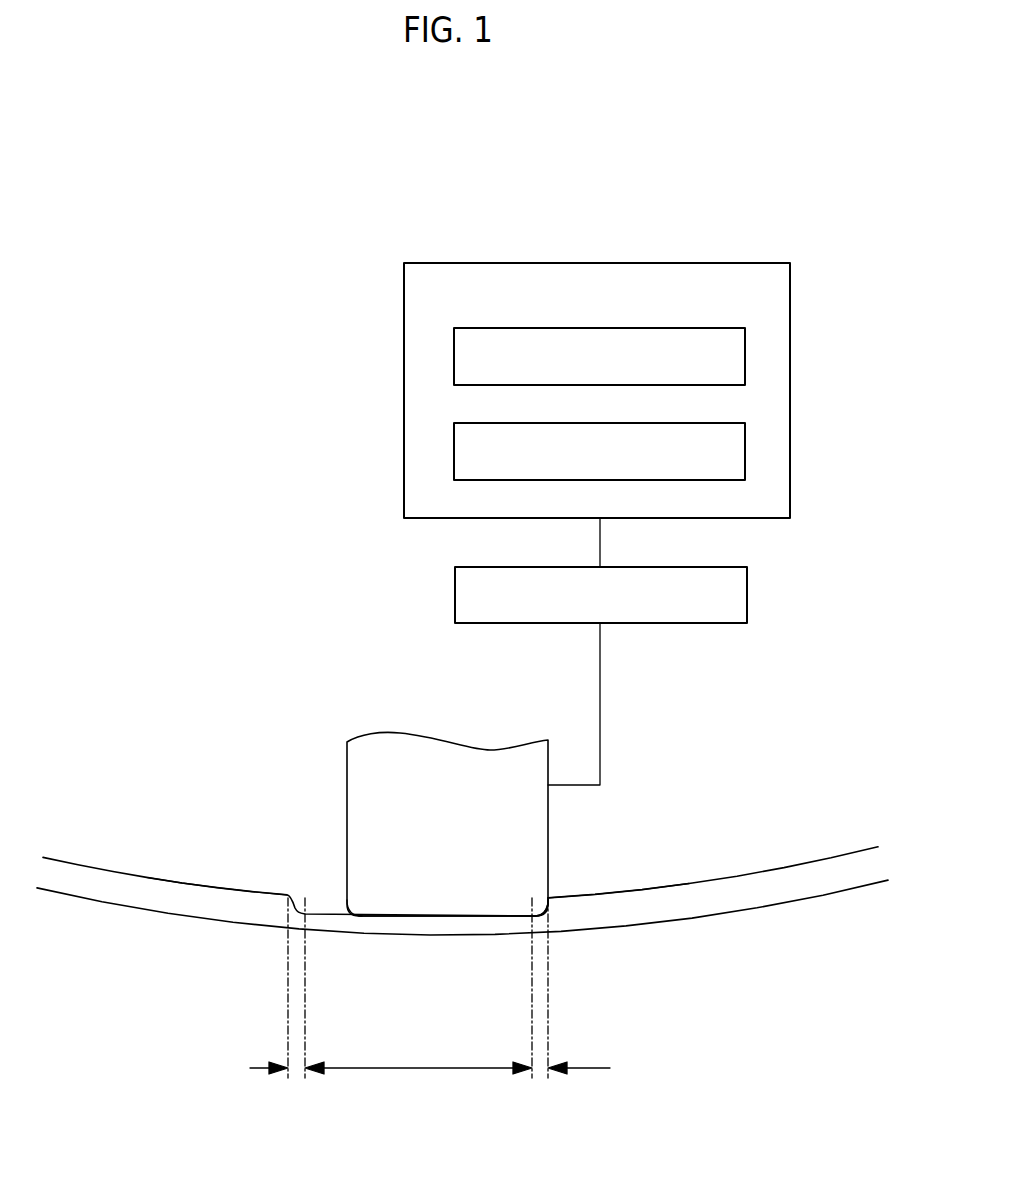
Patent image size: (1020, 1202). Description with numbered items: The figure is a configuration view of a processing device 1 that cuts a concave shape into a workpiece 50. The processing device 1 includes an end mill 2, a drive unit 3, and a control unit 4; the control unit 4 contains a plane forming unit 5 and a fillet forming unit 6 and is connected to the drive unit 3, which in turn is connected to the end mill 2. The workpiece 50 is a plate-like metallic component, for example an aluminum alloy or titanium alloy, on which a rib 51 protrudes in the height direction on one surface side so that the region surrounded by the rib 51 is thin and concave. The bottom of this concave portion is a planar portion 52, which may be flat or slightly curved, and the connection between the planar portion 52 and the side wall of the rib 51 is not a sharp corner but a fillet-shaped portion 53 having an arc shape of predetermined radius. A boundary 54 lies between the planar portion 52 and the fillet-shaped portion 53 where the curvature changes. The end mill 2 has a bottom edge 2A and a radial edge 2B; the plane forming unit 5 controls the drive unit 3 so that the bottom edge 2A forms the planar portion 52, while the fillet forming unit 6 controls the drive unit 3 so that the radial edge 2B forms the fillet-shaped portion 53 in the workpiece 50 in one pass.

The processing device 1 is at (250, 338).
The end mill 2 is at (492, 763).
The bottom edge 2A is at (403, 900).
The radial edge 2B is at (362, 903).
The drive unit 3 is at (747, 595).
The control unit 4 is at (790, 293).
The plane forming unit 5 is at (745, 355).
The fillet forming unit 6 is at (745, 450).
The workpiece 50 is at (756, 878).
The rib 51 is at (260, 905).
The planar portion 52 is at (425, 1070).
The fillet-shaped portion 53 is at (298, 1077).
The boundary 54 is at (305, 1022).